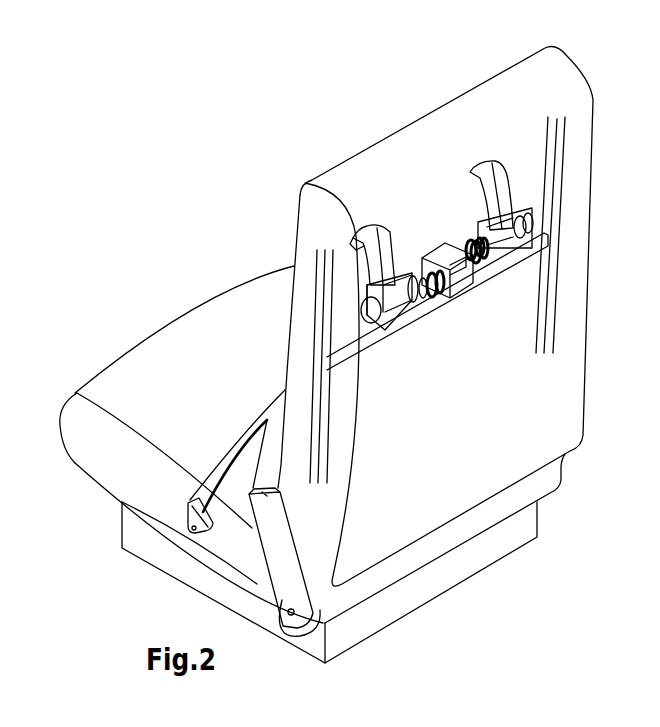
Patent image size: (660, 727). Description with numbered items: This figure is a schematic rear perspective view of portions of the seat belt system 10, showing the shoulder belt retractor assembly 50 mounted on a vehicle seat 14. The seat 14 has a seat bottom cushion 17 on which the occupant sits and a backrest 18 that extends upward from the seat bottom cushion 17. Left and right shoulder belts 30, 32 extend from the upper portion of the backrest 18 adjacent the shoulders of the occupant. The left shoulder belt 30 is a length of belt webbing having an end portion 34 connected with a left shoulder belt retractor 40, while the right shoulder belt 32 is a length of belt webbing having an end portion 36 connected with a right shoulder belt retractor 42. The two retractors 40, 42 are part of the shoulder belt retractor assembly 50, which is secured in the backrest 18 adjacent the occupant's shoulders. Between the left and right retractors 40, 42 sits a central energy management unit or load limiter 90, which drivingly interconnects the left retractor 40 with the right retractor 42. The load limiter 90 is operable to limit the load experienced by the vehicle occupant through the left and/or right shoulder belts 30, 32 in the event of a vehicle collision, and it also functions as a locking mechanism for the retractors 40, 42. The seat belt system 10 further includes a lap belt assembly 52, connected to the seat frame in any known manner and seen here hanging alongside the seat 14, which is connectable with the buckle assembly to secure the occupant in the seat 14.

The seat belt system 10 is at (340, 355).
The vehicle seat 14 is at (312, 436).
The seat bottom cushion 17 is at (147, 368).
The backrest 18 is at (550, 432).
The left shoulder belt 30 is at (321, 224).
The right shoulder belt 32 is at (504, 173).
The end portion 34 is at (372, 268).
The end portion 36 is at (498, 198).
The left shoulder belt retractor 40 is at (396, 336).
The right shoulder belt retractor 42 is at (511, 254).
The shoulder belt retractor assembly 50 is at (456, 324).
The lap belt assembly 52 is at (180, 520).
The load limiter 90 is at (428, 226).